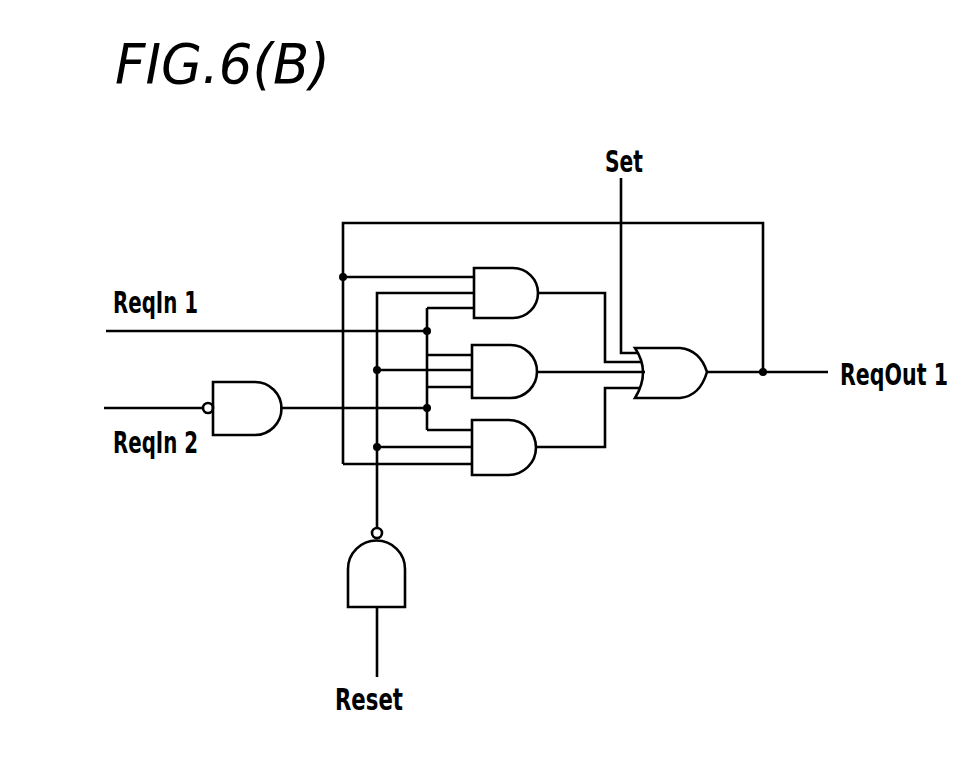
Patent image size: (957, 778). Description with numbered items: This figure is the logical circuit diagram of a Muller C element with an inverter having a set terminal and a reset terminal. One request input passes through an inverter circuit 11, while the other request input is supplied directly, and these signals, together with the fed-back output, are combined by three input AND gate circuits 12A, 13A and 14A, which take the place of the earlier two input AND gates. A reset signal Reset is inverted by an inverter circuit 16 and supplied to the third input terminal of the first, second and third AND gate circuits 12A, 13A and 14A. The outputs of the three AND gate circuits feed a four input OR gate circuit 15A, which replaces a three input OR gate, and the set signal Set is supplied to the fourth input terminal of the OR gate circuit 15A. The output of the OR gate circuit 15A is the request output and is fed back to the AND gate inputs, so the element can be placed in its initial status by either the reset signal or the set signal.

The inverter circuit 11 is at (280, 396).
The first three input AND gate circuit 12A is at (540, 283).
The second three input AND gate circuit 13A is at (540, 358).
The third three input AND gate circuit 14A is at (537, 432).
The four input OR gate circuit 15A is at (680, 348).
The inverter circuit 16 is at (403, 580).